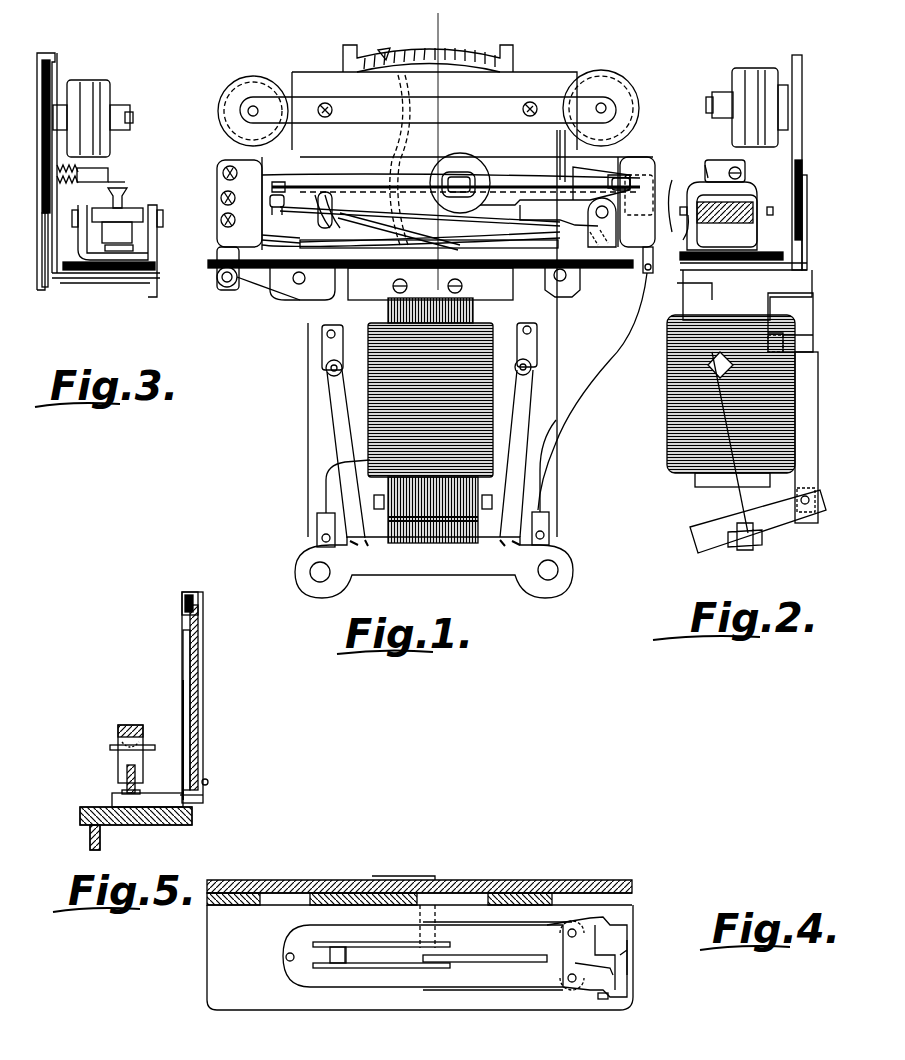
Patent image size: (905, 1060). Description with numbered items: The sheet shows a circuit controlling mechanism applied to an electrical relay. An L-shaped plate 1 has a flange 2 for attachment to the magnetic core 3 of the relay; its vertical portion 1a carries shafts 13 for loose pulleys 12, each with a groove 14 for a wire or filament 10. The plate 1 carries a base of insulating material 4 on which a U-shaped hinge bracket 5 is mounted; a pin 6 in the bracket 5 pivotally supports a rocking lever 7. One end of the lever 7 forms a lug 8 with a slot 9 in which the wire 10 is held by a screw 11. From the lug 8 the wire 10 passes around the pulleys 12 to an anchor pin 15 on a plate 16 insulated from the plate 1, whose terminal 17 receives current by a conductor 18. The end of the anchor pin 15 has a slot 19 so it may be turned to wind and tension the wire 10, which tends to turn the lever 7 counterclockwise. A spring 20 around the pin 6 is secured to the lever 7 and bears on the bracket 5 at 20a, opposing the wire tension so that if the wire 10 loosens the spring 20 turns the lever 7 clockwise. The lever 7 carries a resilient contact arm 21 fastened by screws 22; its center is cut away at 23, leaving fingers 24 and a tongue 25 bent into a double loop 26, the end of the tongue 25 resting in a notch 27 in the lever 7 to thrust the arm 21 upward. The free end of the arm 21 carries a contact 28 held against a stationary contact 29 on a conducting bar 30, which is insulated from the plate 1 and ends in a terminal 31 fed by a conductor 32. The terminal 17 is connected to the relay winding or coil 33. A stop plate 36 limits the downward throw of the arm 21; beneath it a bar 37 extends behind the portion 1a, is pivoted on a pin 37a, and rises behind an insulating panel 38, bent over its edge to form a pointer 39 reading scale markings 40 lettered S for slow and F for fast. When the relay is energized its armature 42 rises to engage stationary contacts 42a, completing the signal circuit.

In FIG. 1, the L-shaped plate 1 is at (322, 135).
In FIG. 3, the L-shaped plate 1 is at (86, 278).
In FIG. 2, the vertical portion of the plate 1a is at (800, 95).
In FIG. 5, the vertical portion of the plate 1a is at (183, 672).
In FIG. 1, the flange 2 is at (330, 248).
In FIG. 3, the flange 2 is at (110, 283).
In FIG. 1, the magnetic core 3 is at (478, 313).
In FIG. 2, the magnetic core 3 is at (813, 287).
In FIG. 1, the base of insulating material 4 is at (246, 194).
In FIG. 3, the base of insulating material 4 is at (55, 292).
In FIG. 4, the base of insulating material 4 is at (262, 1012).
In FIG. 1, the U-shaped hinge bracket 5 is at (428, 27).
In FIG. 2, the U-shaped hinge bracket 5 is at (690, 235).
In FIG. 3, the U-shaped hinge bracket 5 is at (158, 243).
In FIG. 4, the U-shaped hinge bracket 5 is at (613, 920).
In FIG. 2, the pin 6 is at (683, 200).
In FIG. 4, the pin 6 is at (605, 997).
In FIG. 1, the rocking lever 7 is at (525, 205).
In FIG. 2, the rocking lever 7 is at (757, 188).
In FIG. 4, the rocking lever 7 is at (520, 952).
In FIG. 1, the lug 8 is at (592, 150).
In FIG. 2, the lug 8 is at (720, 162).
In FIG. 4, the lug 8 is at (629, 942).
In FIG. 2, the slot 9 is at (701, 160).
In FIG. 1, the wire or filament 10 is at (540, 178).
In FIG. 3, the wire or filament 10 is at (80, 170).
In FIG. 4, the wire or filament 10 is at (620, 980).
In FIG. 2, the screw 11 is at (742, 172).
In FIG. 1, the loose pulleys 12 is at (252, 93).
In FIG. 2, the loose pulleys 12 is at (757, 75).
In FIG. 3, the loose pulleys 12 is at (88, 78).
In FIG. 2, the shafts 13 is at (712, 92).
In FIG. 3, the shafts 13 is at (135, 110).
In FIG. 2, the groove 14 is at (775, 78).
In FIG. 3, the groove 14 is at (100, 80).
In FIG. 1, the anchor pin 15 is at (222, 168).
In FIG. 1, the anchor pin plate 16 is at (222, 217).
In FIG. 3, the anchor pin plate 16 is at (50, 175).
In FIG. 1, the terminal 17 is at (300, 228).
In FIG. 1, the conductor 18 is at (330, 208).
In FIG. 1, the slot 19 is at (222, 195).
In FIG. 2, the spring 20 is at (712, 290).
In FIG. 1, the spring end bearing point 20a is at (592, 285).
In FIG. 2, the spring end bearing point 20a is at (750, 225).
In FIG. 1, the resilient contact arm 21 is at (373, 213).
In FIG. 4, the resilient contact arm 21 is at (305, 928).
In FIG. 1, the screws 22 is at (560, 288).
In FIG. 4, the screws 22 is at (572, 928).
In FIG. 4, the cut-away portion 23 is at (358, 940).
In FIG. 4, the fingers 24 is at (468, 920).
In FIG. 1, the tongue 25 is at (355, 215).
In FIG. 4, the tongue 25 is at (375, 957).
In FIG. 1, the double loop 26 is at (345, 170).
In FIG. 4, the double loop 26 is at (330, 962).
In FIG. 1, the notch 27 is at (340, 325).
In FIG. 1, the contact 28 is at (255, 290).
In FIG. 3, the contact 28 is at (118, 225).
In FIG. 4, the contact 28 is at (286, 960).
In FIG. 1, the stationary contact 29 is at (272, 200).
In FIG. 3, the stationary contact 29 is at (125, 192).
In FIG. 1, the conducting bar 30 is at (300, 200).
In FIG. 3, the conducting bar 30 is at (112, 183).
In FIG. 1, the terminal 31 is at (636, 325).
In FIG. 1, the conductor 32 is at (548, 480).
In FIG. 1, the relay winding 33 is at (390, 425).
In FIG. 1, the stop plate 36 is at (262, 245).
In FIG. 1, the bar 37 is at (398, 302).
In FIG. 5, the bar 37 is at (112, 800).
In FIG. 5, the pin 37a is at (208, 782).
In FIG. 1, the insulating panel 38 is at (506, 47).
In FIG. 5, the insulating panel 38 is at (203, 680).
In FIG. 1, the pointer 39 is at (388, 50).
In FIG. 5, the pointer 39 is at (182, 604).
In FIG. 1, the scale markings 40 is at (450, 48).
In FIG. 1, the armature 42 is at (460, 552).
In FIG. 2, the armature 42 is at (718, 540).
In FIG. 1, the stationary contacts 42a is at (527, 345).
In FIG. 2, the stationary contacts 42a is at (783, 345).